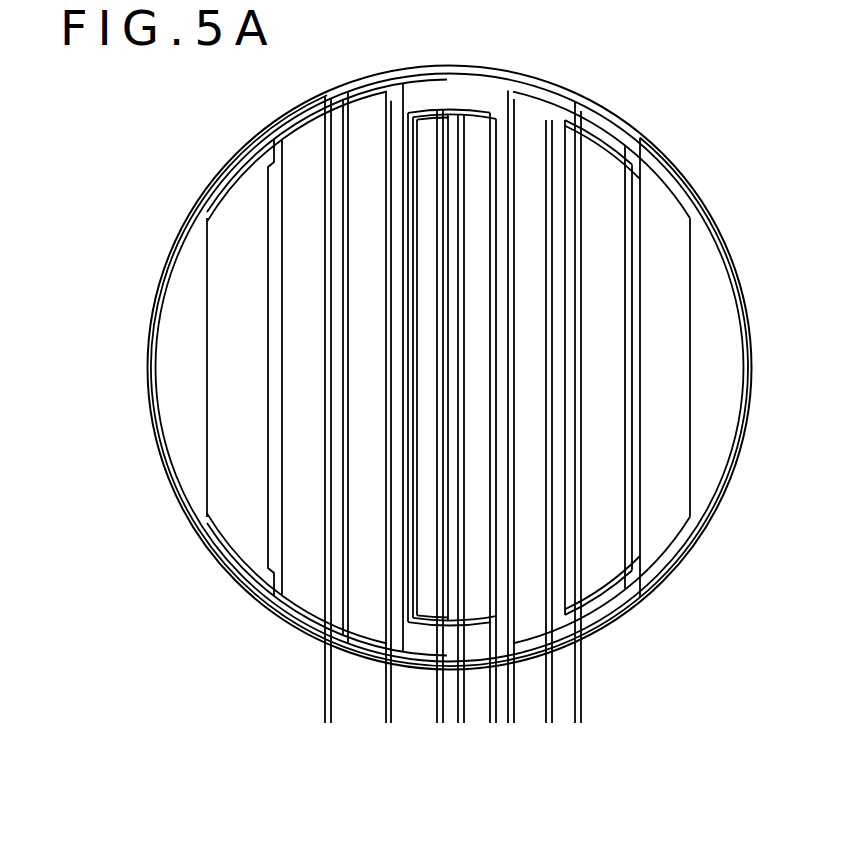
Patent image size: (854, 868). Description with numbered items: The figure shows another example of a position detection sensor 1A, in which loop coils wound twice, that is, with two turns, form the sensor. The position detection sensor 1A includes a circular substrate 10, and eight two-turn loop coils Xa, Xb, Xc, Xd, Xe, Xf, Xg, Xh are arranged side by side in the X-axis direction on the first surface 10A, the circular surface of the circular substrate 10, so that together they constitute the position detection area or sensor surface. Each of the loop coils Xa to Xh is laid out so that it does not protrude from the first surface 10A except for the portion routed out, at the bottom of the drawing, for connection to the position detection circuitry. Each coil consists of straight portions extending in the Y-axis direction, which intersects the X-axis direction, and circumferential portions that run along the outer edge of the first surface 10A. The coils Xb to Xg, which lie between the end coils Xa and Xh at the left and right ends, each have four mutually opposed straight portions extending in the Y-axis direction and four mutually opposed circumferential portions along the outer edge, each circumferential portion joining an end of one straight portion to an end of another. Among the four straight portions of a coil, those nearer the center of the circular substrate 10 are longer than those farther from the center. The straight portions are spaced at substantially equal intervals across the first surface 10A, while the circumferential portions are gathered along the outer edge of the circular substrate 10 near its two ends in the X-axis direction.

The position detection sensor 1A is at (730, 206).
The circular substrate 10 is at (456, 66).
The first surface 10A is at (540, 88).
The loop coil Xa is at (328, 723).
The loop coil Xb is at (388, 723).
The loop coil Xc is at (440, 723).
The loop coil Xd is at (461, 723).
The loop coil Xe is at (493, 723).
The loop coil Xf is at (511, 723).
The loop coil Xg is at (549, 723).
The loop coil Xh is at (578, 723).